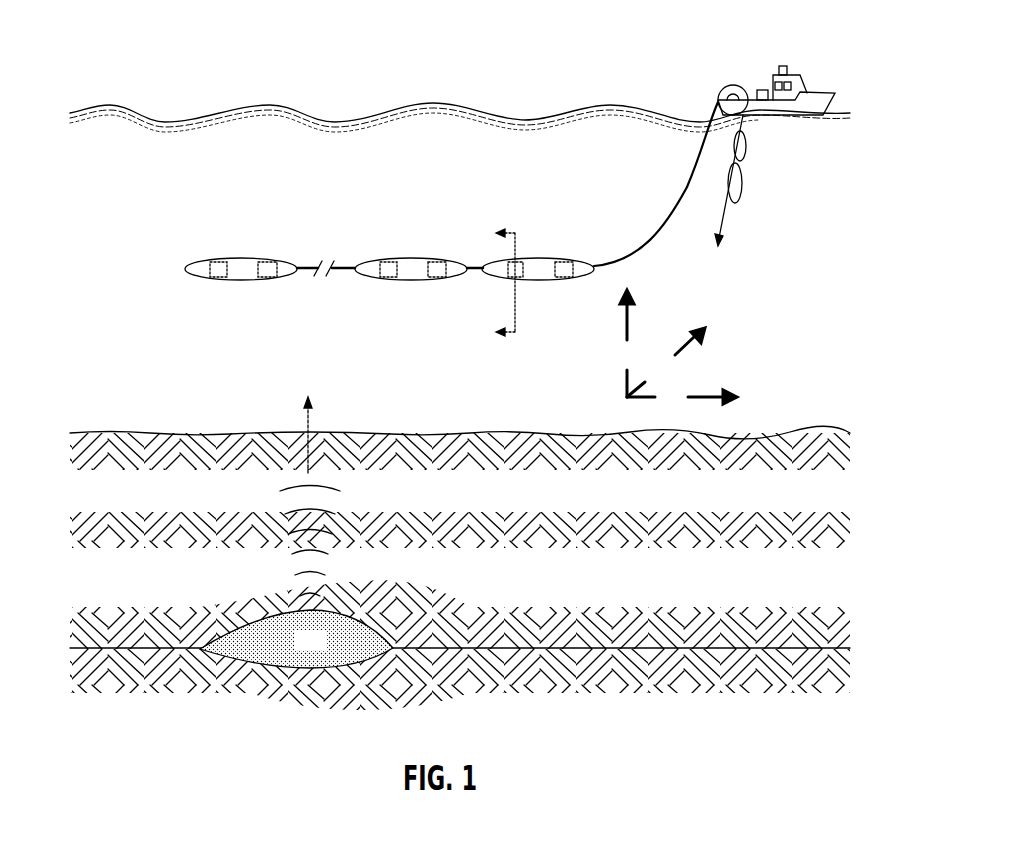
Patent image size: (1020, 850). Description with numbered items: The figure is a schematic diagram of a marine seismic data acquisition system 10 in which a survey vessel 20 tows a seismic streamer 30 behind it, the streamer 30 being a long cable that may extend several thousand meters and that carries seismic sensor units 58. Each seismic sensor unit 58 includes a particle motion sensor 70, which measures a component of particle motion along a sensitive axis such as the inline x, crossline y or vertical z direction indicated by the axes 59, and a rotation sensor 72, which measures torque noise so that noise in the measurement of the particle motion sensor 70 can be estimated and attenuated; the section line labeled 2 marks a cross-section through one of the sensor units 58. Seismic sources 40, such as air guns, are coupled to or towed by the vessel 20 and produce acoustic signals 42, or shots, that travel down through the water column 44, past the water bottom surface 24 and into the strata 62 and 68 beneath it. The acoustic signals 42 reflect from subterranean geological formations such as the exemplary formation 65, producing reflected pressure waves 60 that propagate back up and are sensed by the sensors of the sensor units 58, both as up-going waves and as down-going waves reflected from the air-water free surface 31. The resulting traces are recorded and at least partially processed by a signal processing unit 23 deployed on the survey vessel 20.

The marine seismic data acquisition system 10 is at (258, 74).
The free surface 31 is at (412, 107).
The survey vessel 20 is at (836, 94).
The signal processing unit 23 is at (762, 90).
The seismic streamer 30 is at (688, 185).
The seismic source 40 is at (748, 150).
The acoustic signal 42 is at (727, 218).
The seismic sensor unit 58 is at (283, 259).
The particle motion sensor 70 is at (224, 278).
The rotation sensor 72 is at (276, 278).
The section line 2- 2 is at (497, 282).
The axes 59 is at (614, 405).
The water column 44 is at (791, 336).
The water bottom surface 24 is at (745, 433).
The pressure waves 60 is at (272, 562).
The stratum 62 is at (464, 624).
The formation 65 is at (320, 651).
The stratum 68 is at (464, 691).